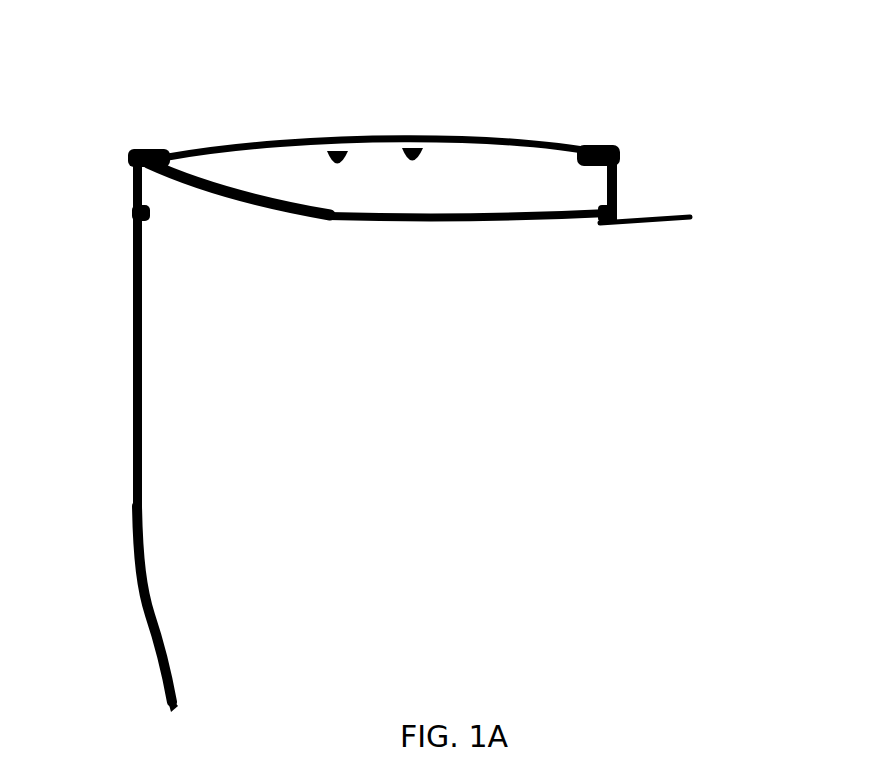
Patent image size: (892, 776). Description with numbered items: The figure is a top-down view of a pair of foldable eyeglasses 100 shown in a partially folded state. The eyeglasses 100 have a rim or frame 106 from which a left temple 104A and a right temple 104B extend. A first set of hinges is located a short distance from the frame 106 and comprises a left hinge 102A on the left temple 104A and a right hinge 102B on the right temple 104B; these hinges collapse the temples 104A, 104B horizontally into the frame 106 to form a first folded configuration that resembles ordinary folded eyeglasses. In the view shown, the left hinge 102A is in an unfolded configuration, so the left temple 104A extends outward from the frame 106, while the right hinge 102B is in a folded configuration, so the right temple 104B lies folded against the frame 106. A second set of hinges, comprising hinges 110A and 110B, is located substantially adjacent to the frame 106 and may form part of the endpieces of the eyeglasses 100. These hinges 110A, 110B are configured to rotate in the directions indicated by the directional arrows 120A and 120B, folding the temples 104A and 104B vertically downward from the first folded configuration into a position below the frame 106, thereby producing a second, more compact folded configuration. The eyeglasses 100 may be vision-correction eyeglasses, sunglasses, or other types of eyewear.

The eyeglasses 100 is at (378, 92).
The left hinge 102A is at (147, 220).
The right hinge 102B is at (690, 217).
The left temple 104A is at (135, 343).
The right temple 104B is at (497, 213).
The frame 106 is at (242, 147).
The hinge of second set 110A is at (140, 147).
The hinge of second set 110B is at (613, 153).
The directional arrow 120A is at (112, 153).
The directional arrow 120B is at (630, 198).